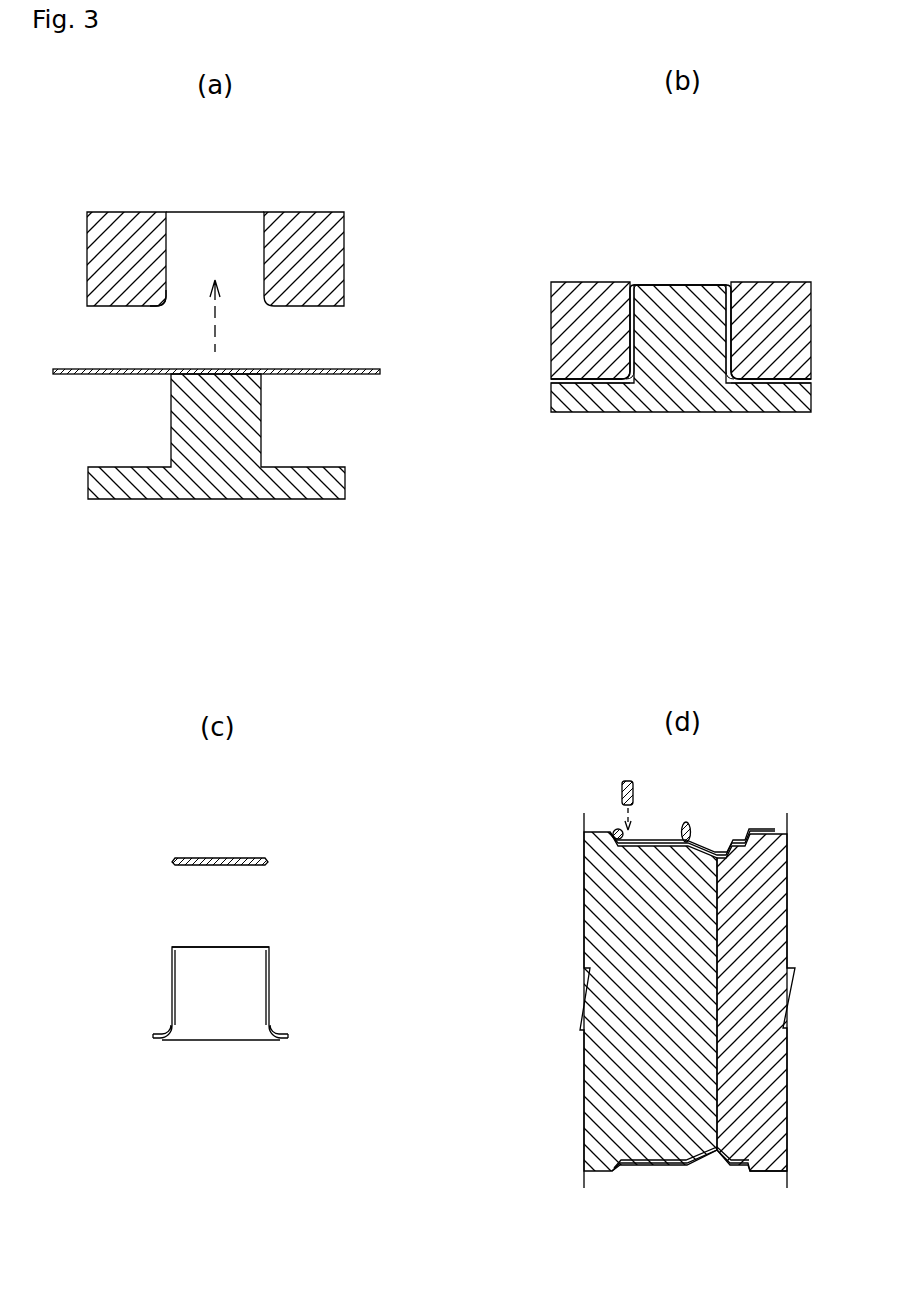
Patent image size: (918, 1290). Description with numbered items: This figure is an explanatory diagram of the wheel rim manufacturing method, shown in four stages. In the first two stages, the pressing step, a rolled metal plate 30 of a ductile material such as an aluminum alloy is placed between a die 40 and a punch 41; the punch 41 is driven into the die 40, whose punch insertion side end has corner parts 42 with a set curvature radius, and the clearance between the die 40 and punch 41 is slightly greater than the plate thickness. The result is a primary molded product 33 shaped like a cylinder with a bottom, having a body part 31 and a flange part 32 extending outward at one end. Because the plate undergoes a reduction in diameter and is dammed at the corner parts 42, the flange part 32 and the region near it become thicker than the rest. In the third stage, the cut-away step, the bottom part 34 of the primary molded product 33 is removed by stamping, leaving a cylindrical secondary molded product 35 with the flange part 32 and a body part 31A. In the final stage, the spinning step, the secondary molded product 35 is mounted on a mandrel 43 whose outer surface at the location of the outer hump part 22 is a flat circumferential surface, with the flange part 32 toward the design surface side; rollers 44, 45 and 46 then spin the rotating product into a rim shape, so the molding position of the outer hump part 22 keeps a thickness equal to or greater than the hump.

The outer hump part 22 is at (630, 838).
The rolled metal plate 30 is at (357, 369).
The body part 31 is at (628, 312).
The body part 31A is at (270, 992).
The flange part 32 is at (619, 385).
The primary molded product 33 is at (720, 261).
The bottom part 34 is at (237, 857).
The secondary molded product 35 is at (305, 937).
The die 40 is at (343, 263).
The punch 41 is at (262, 418).
The corner parts 42 is at (163, 305).
The mandrel 43 is at (745, 1148).
The roller 44 is at (686, 823).
The roller 45 is at (614, 829).
The roller 46 is at (626, 781).